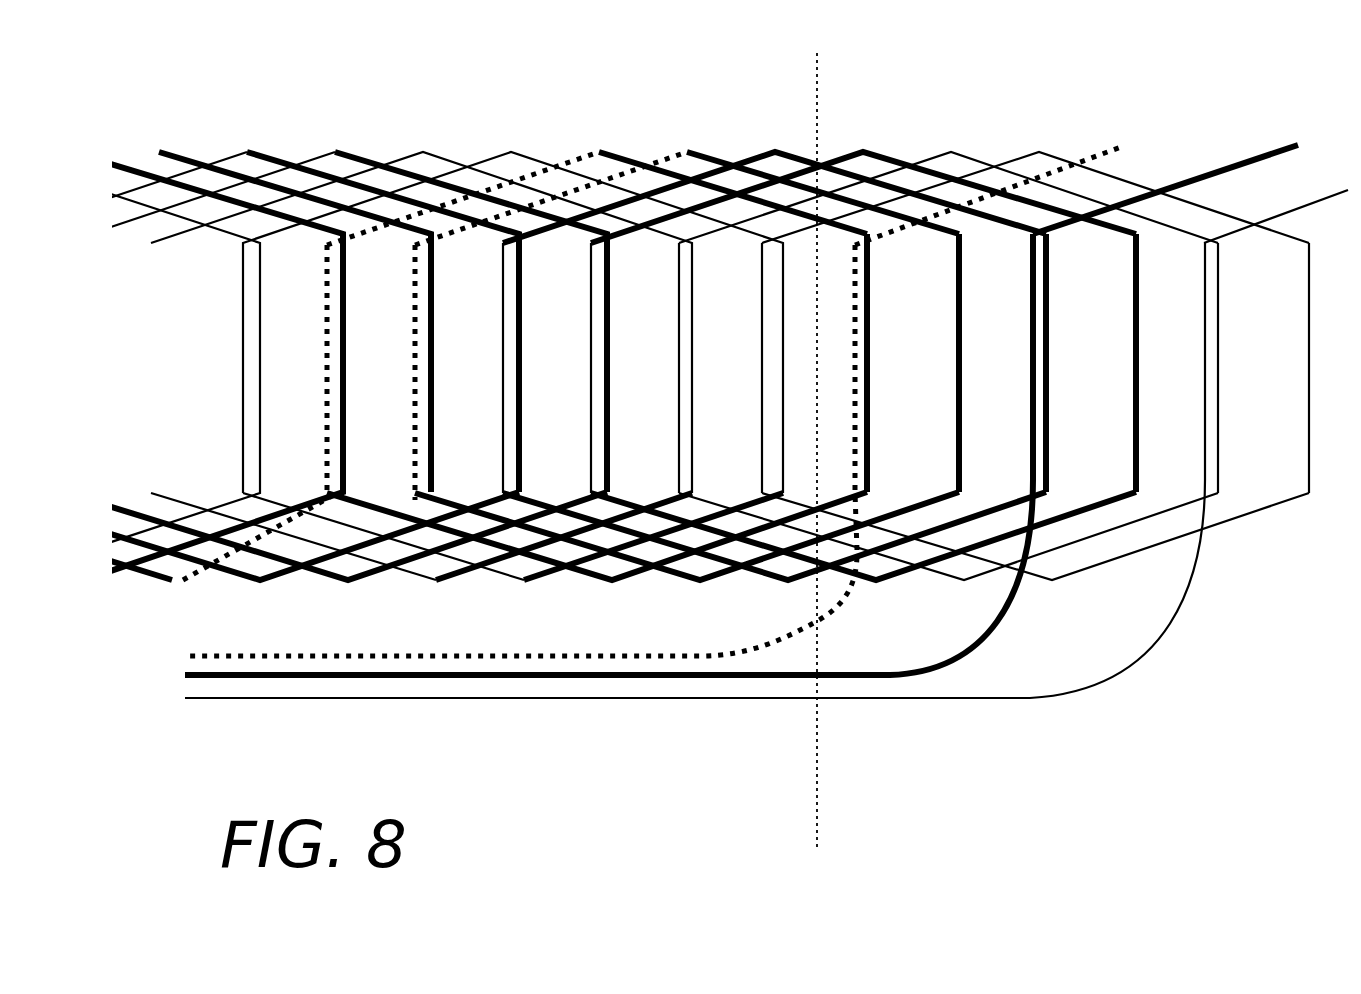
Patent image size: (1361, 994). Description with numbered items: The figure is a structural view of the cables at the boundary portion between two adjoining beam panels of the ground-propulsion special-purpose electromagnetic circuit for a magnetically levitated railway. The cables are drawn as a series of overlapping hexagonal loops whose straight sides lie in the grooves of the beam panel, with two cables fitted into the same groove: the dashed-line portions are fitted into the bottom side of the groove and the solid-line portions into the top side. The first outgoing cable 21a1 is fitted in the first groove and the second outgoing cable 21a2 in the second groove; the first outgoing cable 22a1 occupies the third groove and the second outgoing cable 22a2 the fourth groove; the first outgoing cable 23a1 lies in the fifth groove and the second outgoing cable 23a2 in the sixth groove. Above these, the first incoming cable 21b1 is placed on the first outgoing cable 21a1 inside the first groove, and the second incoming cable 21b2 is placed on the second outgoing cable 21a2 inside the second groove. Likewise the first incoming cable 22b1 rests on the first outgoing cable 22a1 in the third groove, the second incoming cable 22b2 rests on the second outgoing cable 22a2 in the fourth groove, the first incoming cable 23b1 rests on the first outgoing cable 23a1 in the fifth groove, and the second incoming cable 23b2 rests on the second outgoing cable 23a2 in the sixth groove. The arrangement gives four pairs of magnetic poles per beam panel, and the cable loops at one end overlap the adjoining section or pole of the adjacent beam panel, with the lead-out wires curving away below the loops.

The first outgoing cable 21a1 is at (630, 578).
The second outgoing cable 21a2 is at (706, 580).
The first incoming cable 21b1 is at (618, 150).
The second incoming cable 21b2 is at (714, 152).
The first outgoing cable 22a1 is at (796, 580).
The second outgoing cable 22a2 is at (897, 574).
The first incoming cable 22b1 is at (785, 152).
The second incoming cable 22b2 is at (880, 152).
The first outgoing cable 23a1 is at (978, 572).
The second outgoing cable 23a2 is at (1103, 562).
The first incoming cable 23b1 is at (956, 150).
The second incoming cable 23b2 is at (1046, 150).